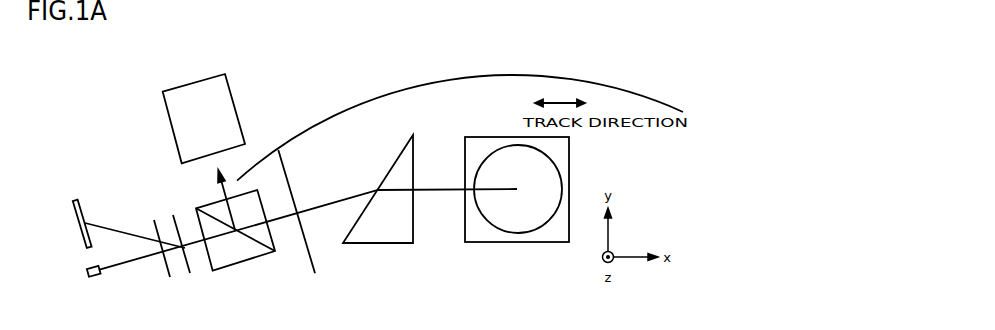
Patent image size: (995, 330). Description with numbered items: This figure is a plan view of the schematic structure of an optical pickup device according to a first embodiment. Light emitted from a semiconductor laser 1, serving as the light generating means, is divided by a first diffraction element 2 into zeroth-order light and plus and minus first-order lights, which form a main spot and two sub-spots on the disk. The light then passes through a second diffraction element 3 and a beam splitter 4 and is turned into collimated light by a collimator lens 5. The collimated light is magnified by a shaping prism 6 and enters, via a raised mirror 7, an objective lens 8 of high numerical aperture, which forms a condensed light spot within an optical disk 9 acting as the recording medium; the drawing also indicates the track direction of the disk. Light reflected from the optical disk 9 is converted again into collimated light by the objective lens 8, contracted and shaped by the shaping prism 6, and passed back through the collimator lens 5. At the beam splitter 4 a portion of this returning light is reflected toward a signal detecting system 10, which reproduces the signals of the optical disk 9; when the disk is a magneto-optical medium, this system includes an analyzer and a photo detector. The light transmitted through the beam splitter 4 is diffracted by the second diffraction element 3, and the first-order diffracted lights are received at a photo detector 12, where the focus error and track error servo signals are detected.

The semiconductor laser 1 is at (92, 277).
The first diffraction element 2 is at (168, 277).
The second diffraction element 3 is at (187, 275).
The beam splitter 4 is at (245, 265).
The collimator lens 5 is at (313, 275).
The shaping prism 6 is at (390, 243).
The raised mirror 7 is at (488, 243).
The objective lens 8 is at (540, 230).
The optical disk 9 is at (437, 83).
The signal detecting system 10 is at (230, 87).
The photo detector 12 is at (82, 204).